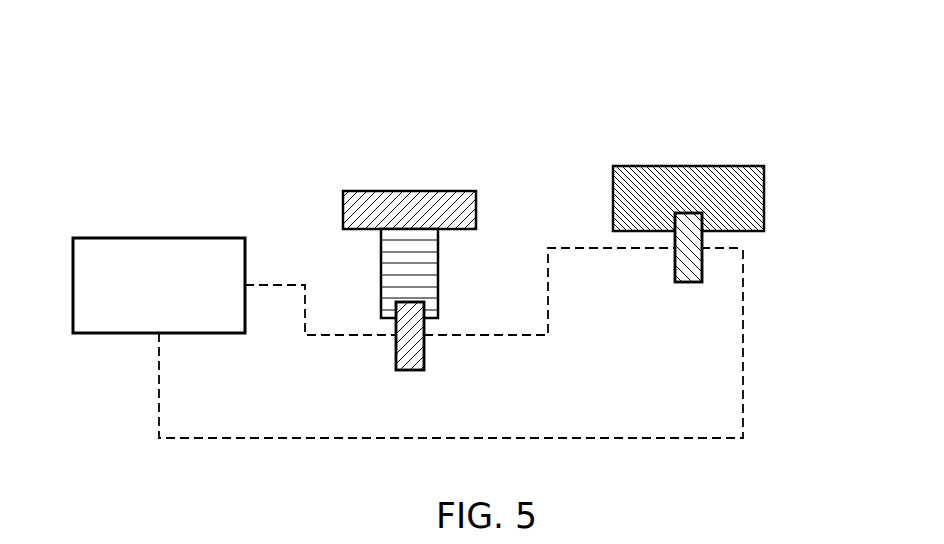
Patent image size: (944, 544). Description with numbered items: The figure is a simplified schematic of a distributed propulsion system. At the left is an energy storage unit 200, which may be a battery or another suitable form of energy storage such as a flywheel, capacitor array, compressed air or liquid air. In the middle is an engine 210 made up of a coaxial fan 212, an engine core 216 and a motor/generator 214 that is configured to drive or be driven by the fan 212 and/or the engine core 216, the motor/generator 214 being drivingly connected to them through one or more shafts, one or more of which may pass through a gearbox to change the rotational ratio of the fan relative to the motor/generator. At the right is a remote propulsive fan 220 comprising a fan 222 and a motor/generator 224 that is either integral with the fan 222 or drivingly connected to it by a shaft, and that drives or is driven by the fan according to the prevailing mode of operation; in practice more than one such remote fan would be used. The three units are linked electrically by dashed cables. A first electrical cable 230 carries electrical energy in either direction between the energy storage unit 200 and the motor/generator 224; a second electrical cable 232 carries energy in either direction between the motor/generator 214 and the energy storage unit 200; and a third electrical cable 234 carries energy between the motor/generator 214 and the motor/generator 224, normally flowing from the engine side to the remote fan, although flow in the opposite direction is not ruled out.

The energy storage unit 200 is at (140, 237).
The engine 210 is at (417, 255).
The coaxial fan 212 is at (476, 205).
The motor/generator 214 is at (405, 372).
The engine core 216 is at (438, 265).
The remote propulsive fan 220 is at (694, 179).
The fan 222 is at (764, 190).
The motor/generator 224 is at (687, 282).
The first electrical cable 230 is at (158, 400).
The second electrical cable 232 is at (277, 287).
The third electrical cable 234 is at (487, 337).